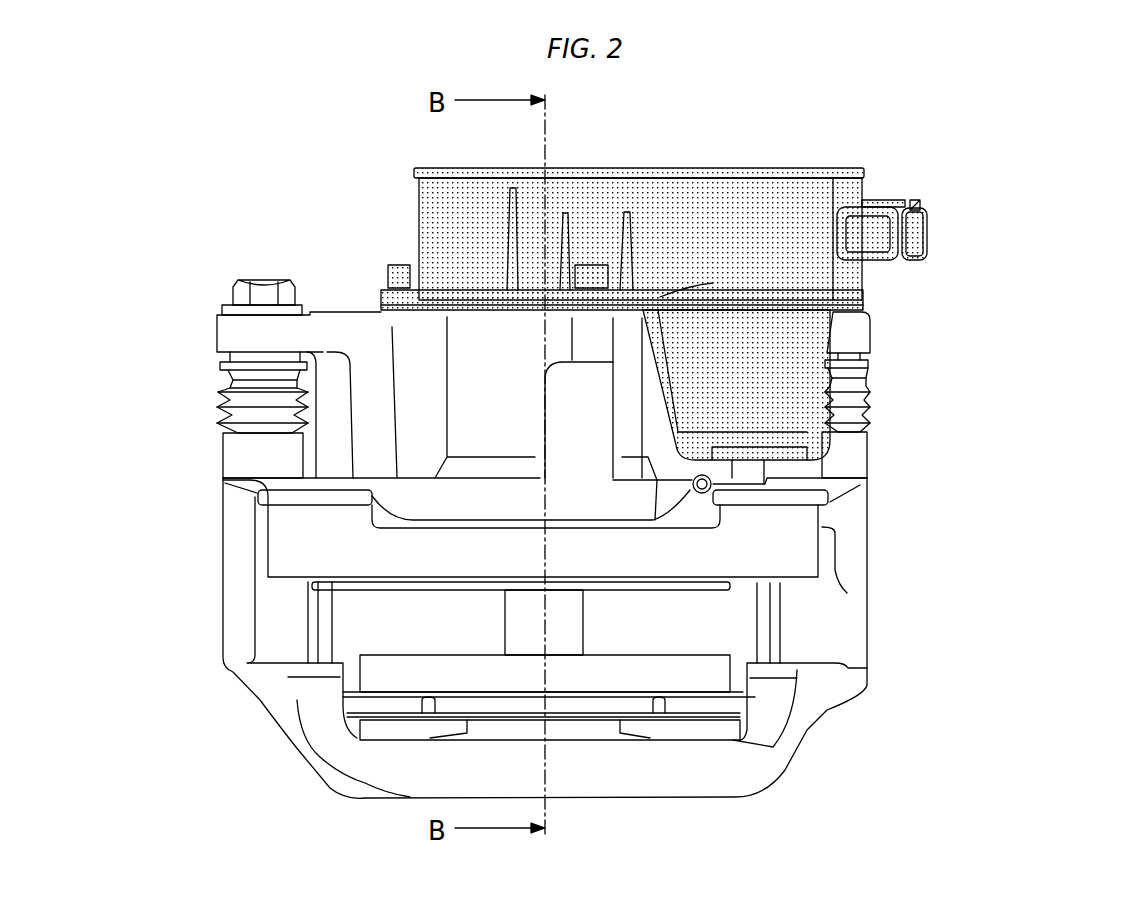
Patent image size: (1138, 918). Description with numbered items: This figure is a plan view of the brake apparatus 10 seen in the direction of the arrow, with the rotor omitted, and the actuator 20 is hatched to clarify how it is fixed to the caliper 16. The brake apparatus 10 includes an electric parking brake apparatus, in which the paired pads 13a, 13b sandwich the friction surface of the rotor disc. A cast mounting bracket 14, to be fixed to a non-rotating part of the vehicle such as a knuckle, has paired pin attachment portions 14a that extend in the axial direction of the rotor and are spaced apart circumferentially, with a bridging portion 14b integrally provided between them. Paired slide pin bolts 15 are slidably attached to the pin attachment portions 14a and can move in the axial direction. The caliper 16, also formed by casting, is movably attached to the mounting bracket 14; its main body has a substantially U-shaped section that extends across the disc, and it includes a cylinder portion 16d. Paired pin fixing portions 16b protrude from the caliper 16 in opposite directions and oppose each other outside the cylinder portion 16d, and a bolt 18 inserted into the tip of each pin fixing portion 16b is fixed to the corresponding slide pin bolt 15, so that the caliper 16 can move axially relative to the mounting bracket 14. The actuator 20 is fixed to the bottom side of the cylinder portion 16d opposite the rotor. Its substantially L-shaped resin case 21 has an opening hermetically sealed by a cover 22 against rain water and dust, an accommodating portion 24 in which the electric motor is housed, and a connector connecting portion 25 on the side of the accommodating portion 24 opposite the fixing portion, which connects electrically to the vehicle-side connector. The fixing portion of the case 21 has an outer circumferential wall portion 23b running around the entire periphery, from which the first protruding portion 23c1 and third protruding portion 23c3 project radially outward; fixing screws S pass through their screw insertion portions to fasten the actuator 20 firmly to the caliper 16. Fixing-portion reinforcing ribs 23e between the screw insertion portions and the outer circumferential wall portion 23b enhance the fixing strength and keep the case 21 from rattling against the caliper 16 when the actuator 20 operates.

The brake apparatus 10 is at (918, 582).
The pad 13a is at (427, 670).
The pad 13b is at (420, 586).
The mounting bracket 14 is at (809, 738).
The pin attachment portion 14a is at (263, 458).
The bridging portion 14b is at (597, 767).
The slide pin bolt 15 is at (223, 365).
The caliper 16 is at (350, 413).
The pin fixing portion 16b is at (250, 332).
The cylinder portion 16d is at (358, 312).
The bolt 18 is at (262, 292).
The actuator 20 is at (932, 193).
The case 21 is at (868, 172).
The cover 22 is at (790, 192).
The outer circumferential wall portion 23b is at (419, 193).
The first protruding portion 23c1 is at (487, 398).
The third protruding portion 23c3 is at (660, 297).
The fixing-portion reinforcing rib 23e is at (507, 243).
The accommodating portion 24 is at (790, 380).
The connector connecting portion 25 is at (890, 250).
The fixing screw S is at (392, 266).